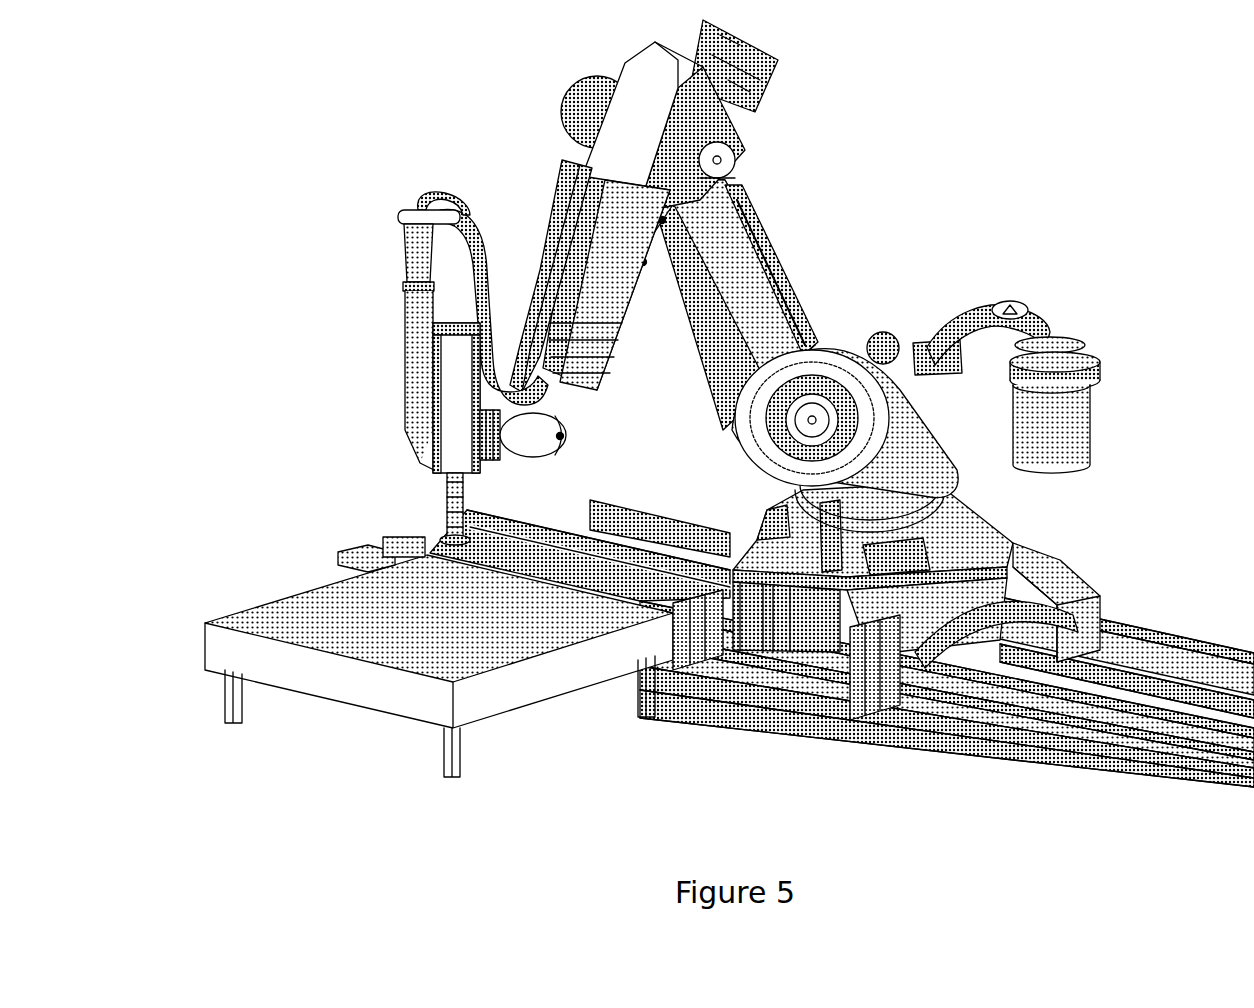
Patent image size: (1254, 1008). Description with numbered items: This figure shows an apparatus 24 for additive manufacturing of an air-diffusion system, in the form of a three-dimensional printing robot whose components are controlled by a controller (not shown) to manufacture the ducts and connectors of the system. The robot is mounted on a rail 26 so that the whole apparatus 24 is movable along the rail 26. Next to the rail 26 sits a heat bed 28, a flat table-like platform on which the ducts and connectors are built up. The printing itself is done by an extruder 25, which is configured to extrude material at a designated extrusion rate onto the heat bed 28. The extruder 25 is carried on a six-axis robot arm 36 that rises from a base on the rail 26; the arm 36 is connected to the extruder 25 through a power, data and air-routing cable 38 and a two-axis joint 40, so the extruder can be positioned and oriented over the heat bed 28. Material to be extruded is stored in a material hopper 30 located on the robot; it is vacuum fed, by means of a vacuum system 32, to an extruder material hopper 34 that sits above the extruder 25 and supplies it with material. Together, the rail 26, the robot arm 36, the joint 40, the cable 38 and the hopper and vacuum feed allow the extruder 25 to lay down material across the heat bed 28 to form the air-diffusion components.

The apparatus 24 is at (348, 72).
The extruder 25 is at (440, 415).
The rail 26 is at (1132, 720).
The heat bed 28 is at (375, 592).
The material hopper 30 is at (1045, 433).
The vacuum system 32 is at (1045, 318).
The extruder material hopper 34 is at (405, 252).
The 6-axis robot arm 36 is at (615, 323).
The power, data and air-routing cable 38 is at (570, 131).
The two-axis joint 40 is at (490, 443).